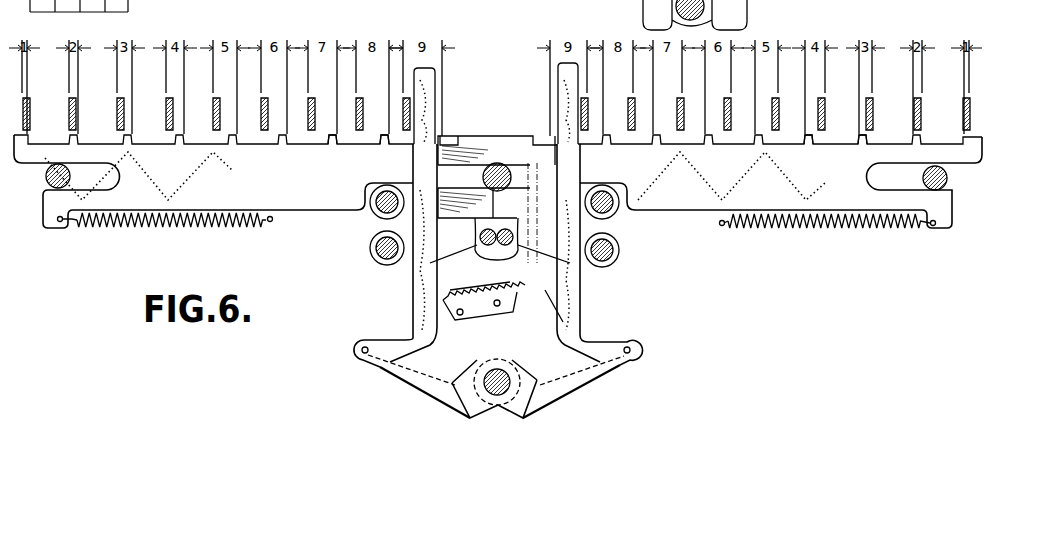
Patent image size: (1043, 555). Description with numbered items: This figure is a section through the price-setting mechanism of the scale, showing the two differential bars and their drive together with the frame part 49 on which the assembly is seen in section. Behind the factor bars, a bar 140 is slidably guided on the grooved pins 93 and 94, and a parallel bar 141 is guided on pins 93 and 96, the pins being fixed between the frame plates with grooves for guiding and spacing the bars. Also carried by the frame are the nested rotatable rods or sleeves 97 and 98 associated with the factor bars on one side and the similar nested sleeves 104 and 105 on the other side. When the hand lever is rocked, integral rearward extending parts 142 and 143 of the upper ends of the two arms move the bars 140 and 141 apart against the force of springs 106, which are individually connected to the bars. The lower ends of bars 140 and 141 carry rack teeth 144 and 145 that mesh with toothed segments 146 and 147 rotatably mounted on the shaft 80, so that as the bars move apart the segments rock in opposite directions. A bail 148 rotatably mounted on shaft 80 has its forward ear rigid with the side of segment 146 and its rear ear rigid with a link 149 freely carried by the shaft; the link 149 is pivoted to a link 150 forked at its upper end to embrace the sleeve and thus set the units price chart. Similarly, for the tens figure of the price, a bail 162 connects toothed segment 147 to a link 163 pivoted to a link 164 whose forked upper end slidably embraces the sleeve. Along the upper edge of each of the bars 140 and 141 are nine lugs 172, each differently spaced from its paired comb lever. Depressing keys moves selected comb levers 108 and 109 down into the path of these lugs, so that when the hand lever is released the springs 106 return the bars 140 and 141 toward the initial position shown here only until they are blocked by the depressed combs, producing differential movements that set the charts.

The lever arm 49 is at (380, 365).
The shaft 80 is at (497, 392).
The pin 93 is at (497, 163).
The pin 94 is at (948, 180).
The pin 96 is at (46, 178).
The nested rods or sleeves 97 is at (619, 213).
The nested rods or sleeves 98 is at (621, 251).
The nested sleeves or rods 104 is at (376, 213).
The nested sleeves or rods 105 is at (375, 252).
The springs 106 is at (143, 227).
The comb levers 108 is at (728, 133).
The comb levers 109 is at (316, 132).
The bar 140 is at (778, 214).
The bar 141 is at (303, 198).
The rearward extending part 142 is at (553, 250).
The rearward extending part 143 is at (430, 263).
The rack teeth 144 is at (450, 280).
The rack teeth 145 is at (575, 290).
The toothed segment 146 is at (425, 352).
The toothed segment 147 is at (563, 322).
The bail 148 is at (540, 400).
The link 149 is at (512, 418).
The link 150 is at (427, 82).
The bail 162 is at (462, 404).
The link 163 is at (600, 372).
The link 164 is at (567, 80).
The lugs 172 is at (386, 140).